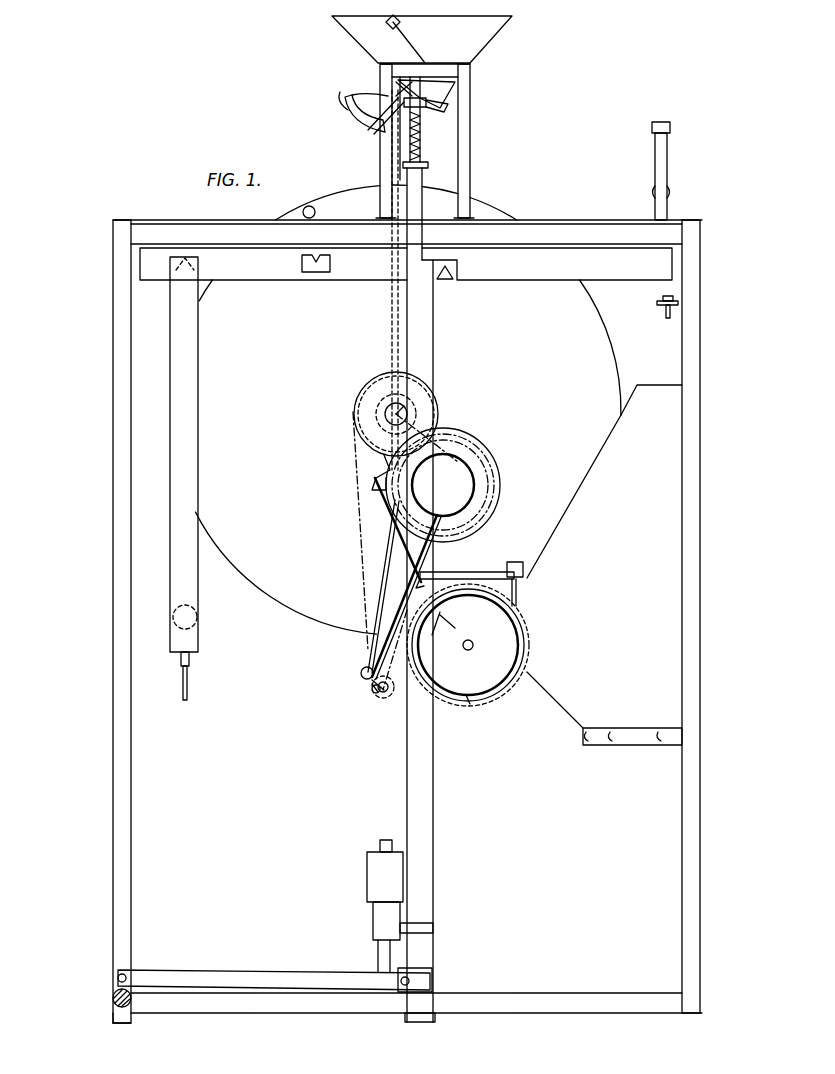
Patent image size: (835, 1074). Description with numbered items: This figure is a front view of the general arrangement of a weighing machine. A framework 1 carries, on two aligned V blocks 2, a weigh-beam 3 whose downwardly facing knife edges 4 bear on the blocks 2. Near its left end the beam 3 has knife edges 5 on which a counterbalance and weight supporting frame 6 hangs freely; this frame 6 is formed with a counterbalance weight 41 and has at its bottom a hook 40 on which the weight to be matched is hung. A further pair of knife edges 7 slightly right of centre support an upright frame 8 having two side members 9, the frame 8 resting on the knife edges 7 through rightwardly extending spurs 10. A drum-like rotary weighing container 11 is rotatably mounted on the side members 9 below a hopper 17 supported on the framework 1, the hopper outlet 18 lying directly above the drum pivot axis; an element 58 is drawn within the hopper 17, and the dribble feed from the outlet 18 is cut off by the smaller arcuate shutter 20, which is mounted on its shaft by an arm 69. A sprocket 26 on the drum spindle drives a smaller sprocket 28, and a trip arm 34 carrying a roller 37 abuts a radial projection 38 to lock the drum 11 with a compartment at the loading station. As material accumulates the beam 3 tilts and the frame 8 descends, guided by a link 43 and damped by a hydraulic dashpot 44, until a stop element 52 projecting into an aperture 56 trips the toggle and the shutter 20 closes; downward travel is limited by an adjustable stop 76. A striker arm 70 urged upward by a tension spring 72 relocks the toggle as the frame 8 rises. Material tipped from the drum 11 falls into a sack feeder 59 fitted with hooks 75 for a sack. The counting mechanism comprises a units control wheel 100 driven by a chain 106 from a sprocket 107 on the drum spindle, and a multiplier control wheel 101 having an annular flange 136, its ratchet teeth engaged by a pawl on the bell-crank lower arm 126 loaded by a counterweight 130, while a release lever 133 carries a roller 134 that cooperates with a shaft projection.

The framework 1 is at (690, 805).
The V blocks 2 is at (317, 273).
The weigh-beam 3 is at (250, 268).
The knife edges 4 is at (320, 252).
The knife edges 5 is at (185, 258).
The counterbalance and weight supporting frame 6 is at (178, 490).
The knife edges 7 is at (445, 279).
The upright frame 8 is at (434, 745).
The side members 9 is at (410, 742).
The spurs 10 is at (458, 269).
The rotary weighing container 11 is at (546, 348).
The hopper 17 is at (466, 57).
The outlet 18 is at (400, 120).
The arcuate shutter 20 is at (353, 106).
The sprocket 26 is at (360, 402).
The sprocket 28 is at (384, 698).
The trip arm 34 is at (394, 292).
The roller 37 is at (370, 686).
The radial projection 38 is at (373, 694).
The hook 40 is at (189, 680).
The counterbalance weight 41 is at (196, 606).
The link 43 is at (266, 972).
The hydraulic dashpot 44 is at (386, 916).
The stop element 52 is at (436, 92).
The aperture 56 is at (440, 112).
The deflector 58 is at (400, 22).
The sack feeder 59 is at (640, 590).
The arm 69 is at (365, 94).
The striker arm 70 is at (421, 160).
The tension spring 72 is at (422, 138).
The hooks 75 is at (614, 742).
The adjustable stop 76 is at (674, 303).
The units control wheel 100 is at (492, 470).
The multiplier control wheel 101 is at (506, 672).
The chain 106 is at (420, 413).
The sprocket 107 is at (404, 408).
The lower arm 126 is at (490, 560).
The counterweight 130 is at (516, 560).
The release lever 133 is at (372, 640).
The roller 134 is at (364, 670).
The annular flange 136 is at (470, 702).